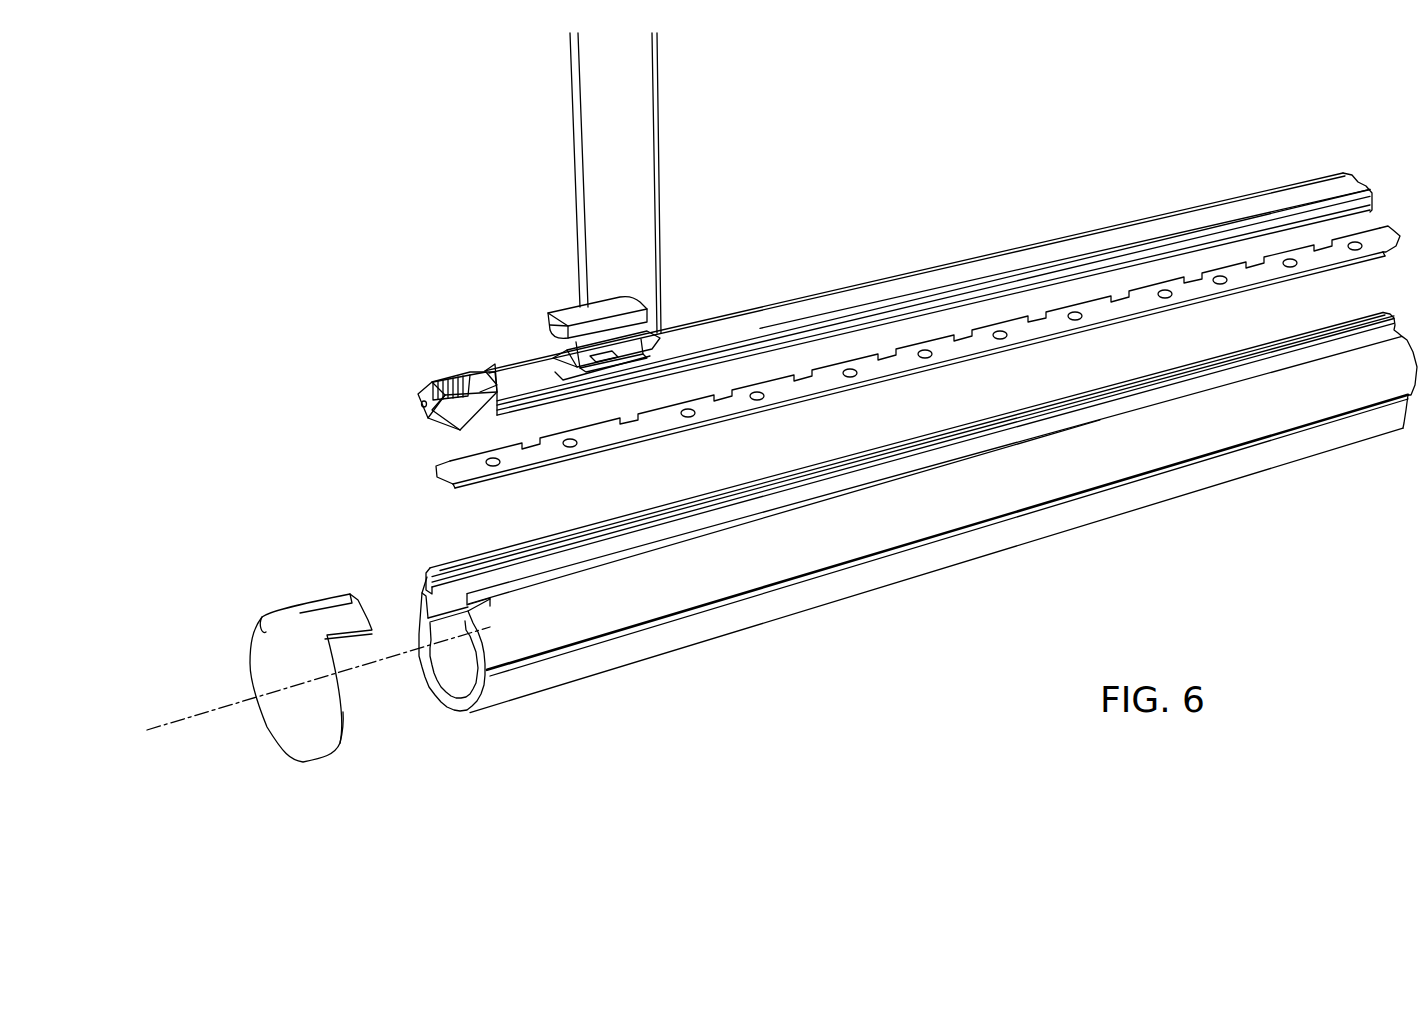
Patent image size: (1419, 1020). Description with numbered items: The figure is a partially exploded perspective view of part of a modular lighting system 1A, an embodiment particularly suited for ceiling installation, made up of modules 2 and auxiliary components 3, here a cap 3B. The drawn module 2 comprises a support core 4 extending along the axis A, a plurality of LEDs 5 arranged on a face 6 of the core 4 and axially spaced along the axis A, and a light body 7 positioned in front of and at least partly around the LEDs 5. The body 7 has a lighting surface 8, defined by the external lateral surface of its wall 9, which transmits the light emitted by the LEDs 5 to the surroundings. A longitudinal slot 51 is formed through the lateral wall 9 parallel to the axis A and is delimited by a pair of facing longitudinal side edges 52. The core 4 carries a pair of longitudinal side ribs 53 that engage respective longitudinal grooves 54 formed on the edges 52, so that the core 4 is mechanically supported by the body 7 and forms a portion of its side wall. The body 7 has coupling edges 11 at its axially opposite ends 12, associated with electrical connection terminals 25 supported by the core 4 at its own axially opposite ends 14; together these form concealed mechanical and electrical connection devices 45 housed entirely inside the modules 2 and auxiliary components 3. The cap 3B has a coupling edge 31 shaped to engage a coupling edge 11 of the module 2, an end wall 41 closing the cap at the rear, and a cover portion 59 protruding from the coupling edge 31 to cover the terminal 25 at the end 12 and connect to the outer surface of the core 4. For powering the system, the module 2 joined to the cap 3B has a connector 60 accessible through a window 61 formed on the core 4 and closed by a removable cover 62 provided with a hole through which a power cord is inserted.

The modular lighting system 1A is at (866, 186).
The module 2 is at (1085, 508).
The auxiliary component 3 is at (277, 773).
The cap 3B is at (266, 619).
The support core 4 is at (988, 283).
The LEDs 5 is at (925, 360).
The face 6 is at (638, 394).
The light body 7 is at (920, 572).
The lighting surface 8 is at (643, 634).
The lateral wall 9 is at (730, 620).
The coupling edge 11 is at (460, 710).
The axially opposite end 12 is at (488, 700).
The axially opposite end of the core 14 is at (436, 390).
The electrical connection terminal 25 is at (462, 381).
The coupling edge 31 is at (352, 717).
The end wall 41 is at (284, 725).
The concealed mechanical and electrical connection device 45 is at (378, 494).
The longitudinal slot 51 is at (1112, 411).
The longitudinal side edges 52 is at (443, 571).
The longitudinal side ribs 53 is at (418, 392).
The longitudinal grooves 54 is at (423, 630).
The cover portion 59 is at (330, 603).
The connector 60 is at (633, 340).
The window 61 is at (672, 352).
The removable cover 62 is at (600, 306).
The axis A is at (168, 722).